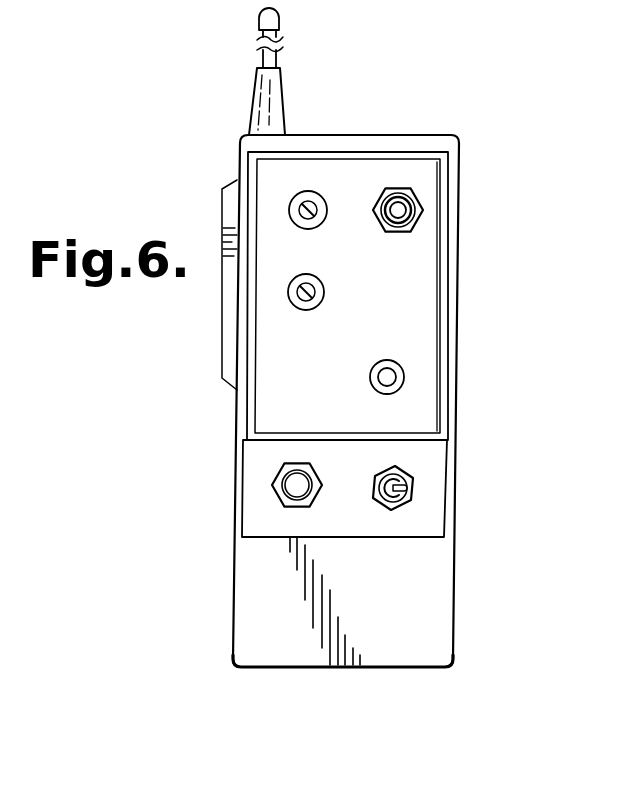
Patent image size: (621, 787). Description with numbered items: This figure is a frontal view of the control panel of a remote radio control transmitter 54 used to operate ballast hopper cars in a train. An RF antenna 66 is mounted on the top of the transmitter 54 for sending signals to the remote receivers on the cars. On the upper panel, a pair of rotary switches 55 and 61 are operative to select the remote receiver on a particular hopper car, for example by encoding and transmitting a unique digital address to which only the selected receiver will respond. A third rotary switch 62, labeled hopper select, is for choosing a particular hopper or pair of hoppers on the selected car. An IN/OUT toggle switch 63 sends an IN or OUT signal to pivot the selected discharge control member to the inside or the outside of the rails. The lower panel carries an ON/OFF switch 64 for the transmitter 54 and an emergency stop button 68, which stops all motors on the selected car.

The remote radio control transmitter 54 is at (458, 392).
The rotary switch 55 is at (312, 224).
The rotary switch 61 is at (297, 283).
The third rotary switch 62 is at (386, 360).
The IN/OUT toggle switch 63 is at (420, 215).
The ON/OFF switch 64 is at (405, 505).
The RF antenna 66 is at (271, 95).
The emergency stop button 68 is at (277, 474).